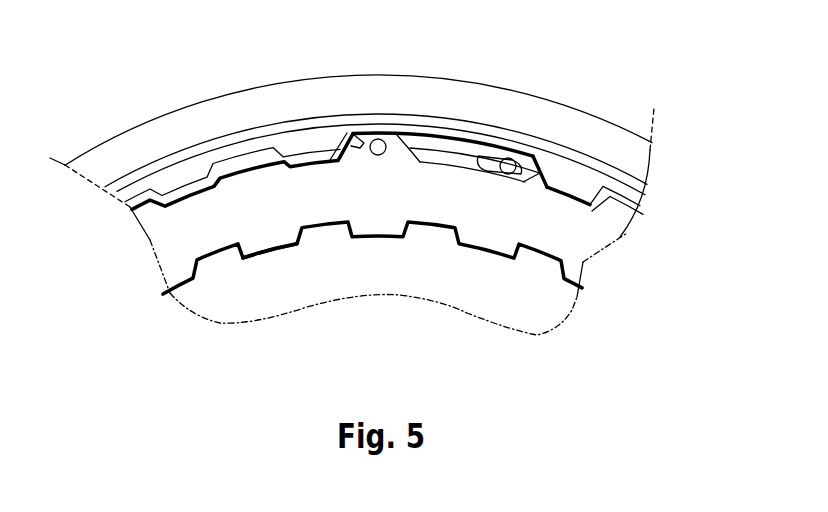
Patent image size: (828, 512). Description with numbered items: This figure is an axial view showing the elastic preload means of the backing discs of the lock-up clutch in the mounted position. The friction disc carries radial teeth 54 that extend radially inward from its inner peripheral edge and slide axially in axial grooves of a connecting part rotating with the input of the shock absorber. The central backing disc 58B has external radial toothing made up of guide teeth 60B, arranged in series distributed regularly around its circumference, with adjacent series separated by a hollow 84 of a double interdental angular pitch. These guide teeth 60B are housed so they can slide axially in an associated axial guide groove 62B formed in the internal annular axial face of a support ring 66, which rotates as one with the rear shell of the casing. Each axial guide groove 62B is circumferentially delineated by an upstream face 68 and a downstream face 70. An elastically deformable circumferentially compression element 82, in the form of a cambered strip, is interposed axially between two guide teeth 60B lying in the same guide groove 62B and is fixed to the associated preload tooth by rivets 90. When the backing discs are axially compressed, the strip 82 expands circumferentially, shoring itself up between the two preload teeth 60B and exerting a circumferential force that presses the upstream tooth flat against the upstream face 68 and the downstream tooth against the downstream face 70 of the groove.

The radial teeth 54 is at (377, 224).
The central backing disc 58B is at (263, 213).
The guide tooth 60B is at (397, 140).
The axial guide groove 62B is at (437, 145).
The support ring 66 is at (565, 181).
The upstream face 68 is at (532, 154).
The downstream face 70 is at (360, 133).
The elastically deformable circumferentially compression element 82 is at (458, 162).
The hollow 84 is at (483, 172).
The rivet 90 is at (377, 156).